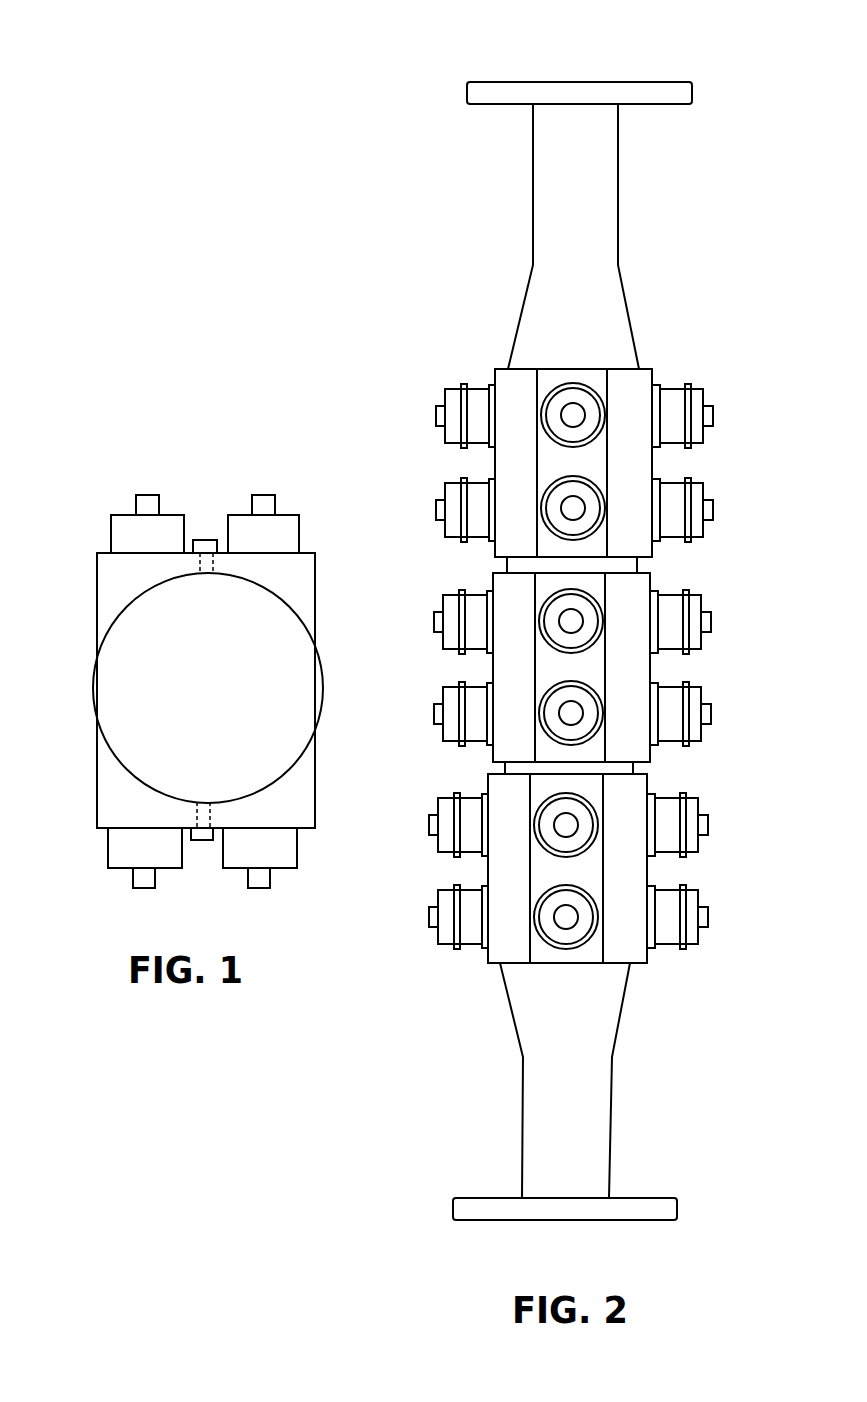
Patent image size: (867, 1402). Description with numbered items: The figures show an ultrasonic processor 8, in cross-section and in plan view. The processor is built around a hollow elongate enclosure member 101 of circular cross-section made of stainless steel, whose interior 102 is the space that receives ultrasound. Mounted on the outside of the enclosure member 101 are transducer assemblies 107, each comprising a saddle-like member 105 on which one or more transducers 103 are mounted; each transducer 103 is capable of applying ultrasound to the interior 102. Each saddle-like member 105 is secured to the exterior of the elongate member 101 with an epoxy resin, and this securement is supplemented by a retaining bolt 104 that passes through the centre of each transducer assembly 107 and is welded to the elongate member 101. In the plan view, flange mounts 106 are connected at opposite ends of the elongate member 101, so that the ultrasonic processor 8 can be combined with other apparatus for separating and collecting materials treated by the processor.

In FIG. 2, the ultrasonic processor 8 is at (561, 614).
In FIG. 1, the hollow elongate enclosure member 101 is at (93, 707).
In FIG. 2, the hollow elongate enclosure member 101 is at (597, 770).
In FIG. 1, the interior 102 is at (187, 697).
In FIG. 1, the transducer 103 is at (148, 853).
In FIG. 2, the transducer 103 is at (695, 528).
In FIG. 1, the retaining bolt 104 is at (208, 538).
In FIG. 1, the saddle-like member 105 is at (100, 562).
In FIG. 2, the saddle-like member 105 is at (590, 473).
In FIG. 2, the flange mount 106 is at (480, 97).
In FIG. 2, the transducer assembly 107 is at (450, 515).